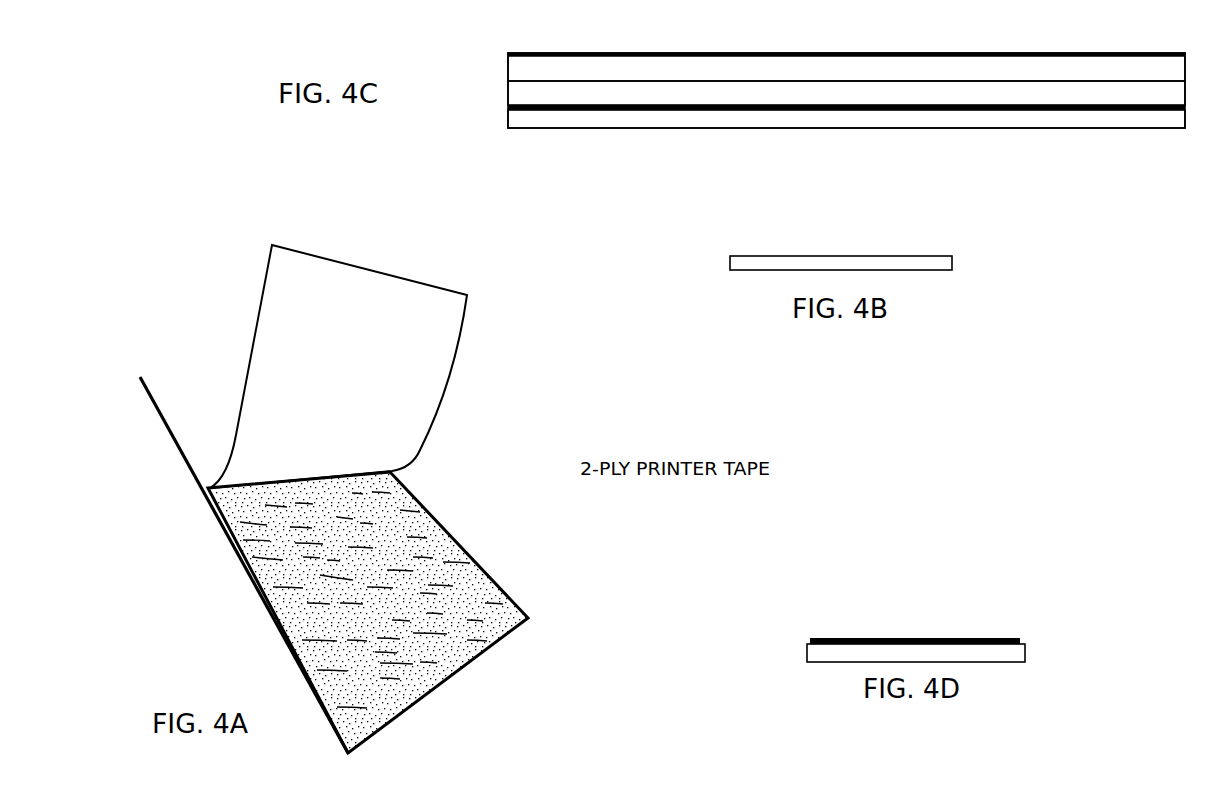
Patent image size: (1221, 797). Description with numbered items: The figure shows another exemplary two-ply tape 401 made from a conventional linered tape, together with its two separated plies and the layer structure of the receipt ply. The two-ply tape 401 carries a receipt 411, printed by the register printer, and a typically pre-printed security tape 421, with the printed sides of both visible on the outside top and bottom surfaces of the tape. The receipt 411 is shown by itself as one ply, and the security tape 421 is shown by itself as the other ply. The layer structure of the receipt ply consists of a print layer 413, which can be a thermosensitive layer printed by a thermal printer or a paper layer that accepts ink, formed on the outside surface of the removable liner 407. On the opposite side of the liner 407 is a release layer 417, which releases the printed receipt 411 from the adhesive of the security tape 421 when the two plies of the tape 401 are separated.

In FIG. 4A, the 2-PLY tape 401 is at (165, 427).
In FIG. 4A, the receipt 411 is at (711, 148).
In FIG. 4B, the receipt 411 is at (704, 258).
In FIG. 4A, the security tape 421 is at (726, 789).
In FIG. 4D, the security tape 421 is at (781, 661).
In FIG. 4C, the print layer 413 is at (507, 65).
In FIG. 4C, the liner 407 is at (507, 93).
In FIG. 4C, the release layer 417 is at (504, 118).